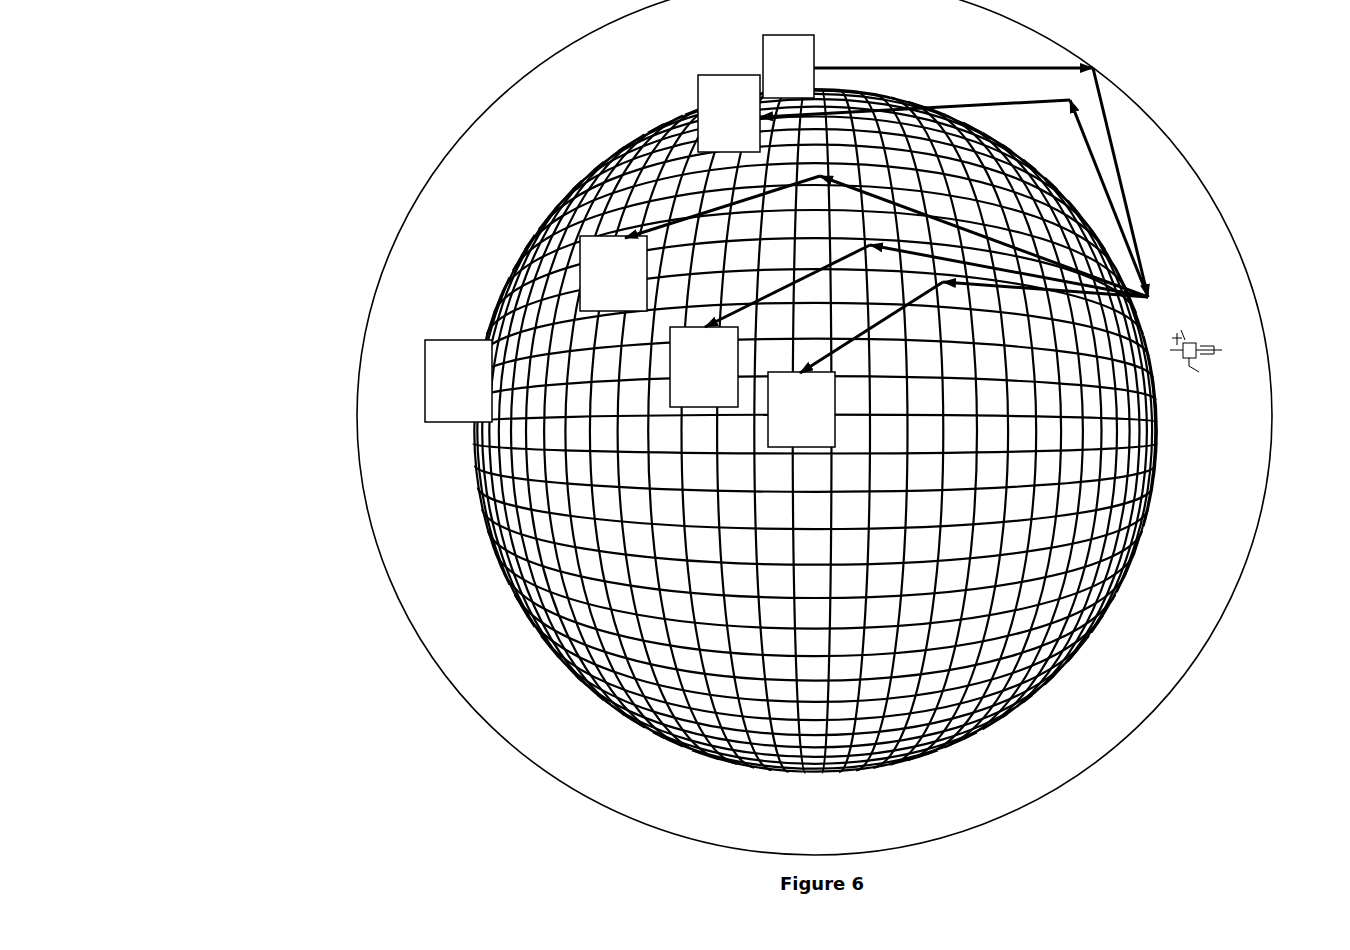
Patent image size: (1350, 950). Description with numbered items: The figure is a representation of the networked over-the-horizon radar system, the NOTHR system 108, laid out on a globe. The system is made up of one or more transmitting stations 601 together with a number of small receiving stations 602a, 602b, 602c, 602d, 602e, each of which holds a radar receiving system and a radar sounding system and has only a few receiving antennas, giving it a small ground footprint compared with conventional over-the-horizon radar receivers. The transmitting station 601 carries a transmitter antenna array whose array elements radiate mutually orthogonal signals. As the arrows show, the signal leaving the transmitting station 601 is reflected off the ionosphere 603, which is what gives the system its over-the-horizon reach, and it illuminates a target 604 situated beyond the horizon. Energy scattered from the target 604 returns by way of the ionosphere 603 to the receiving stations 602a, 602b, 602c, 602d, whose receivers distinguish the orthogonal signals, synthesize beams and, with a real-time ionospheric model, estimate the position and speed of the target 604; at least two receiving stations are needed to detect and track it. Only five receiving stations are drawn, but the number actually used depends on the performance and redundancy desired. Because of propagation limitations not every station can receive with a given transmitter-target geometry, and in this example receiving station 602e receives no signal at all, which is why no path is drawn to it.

The NOTHR system 108 is at (345, 88).
The transmitting station 601 is at (955, 166).
The receiving station 602a is at (923, 186).
The receiving station 602b is at (864, 243).
The receiving station 602c is at (909, 326).
The receiving station 602d is at (958, 364).
The receiving station 602e is at (458, 381).
The ionosphere 603 is at (1213, 193).
The target 604 is at (1173, 378).